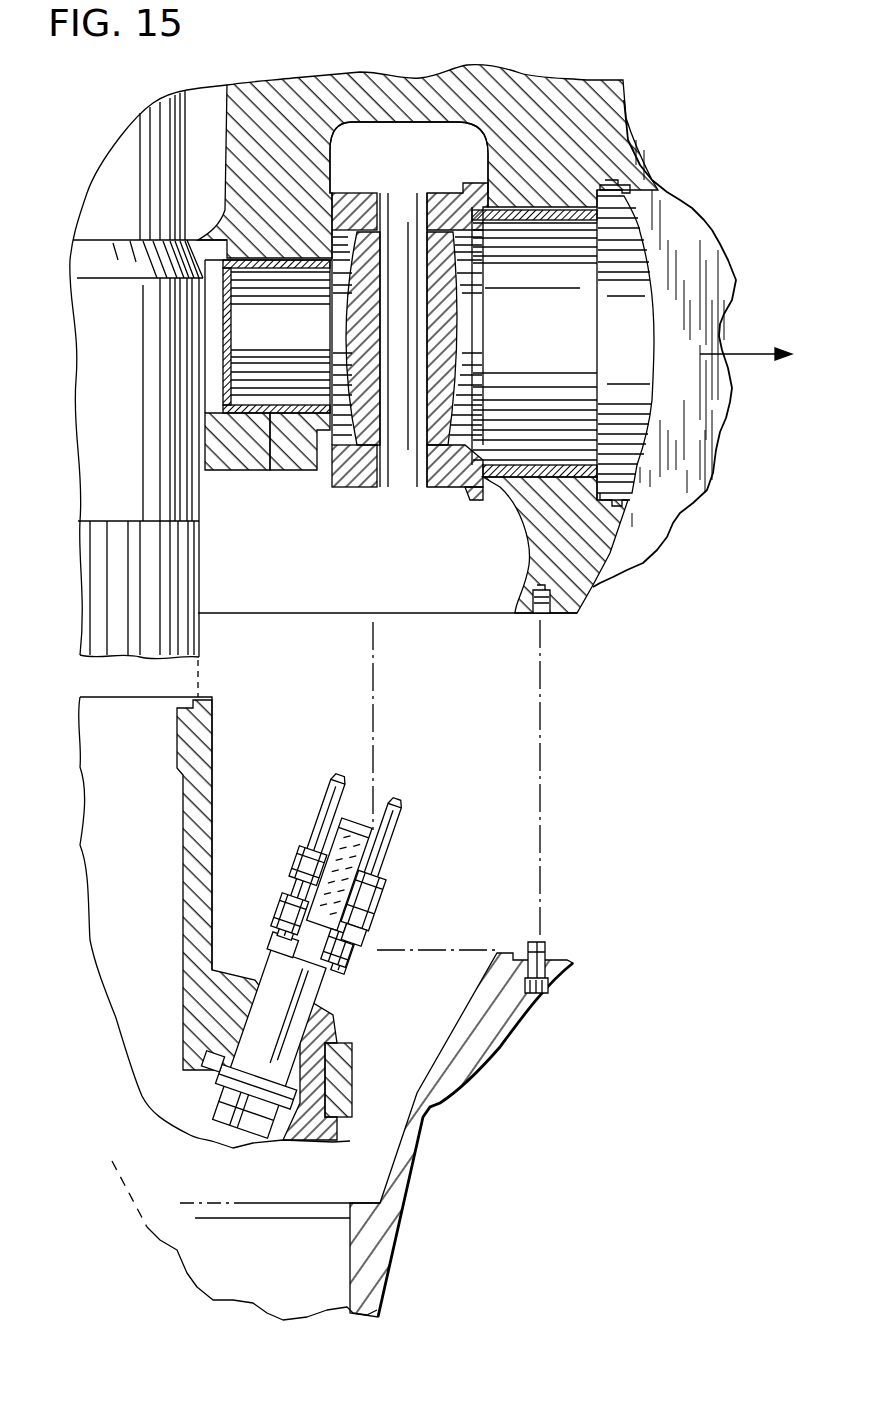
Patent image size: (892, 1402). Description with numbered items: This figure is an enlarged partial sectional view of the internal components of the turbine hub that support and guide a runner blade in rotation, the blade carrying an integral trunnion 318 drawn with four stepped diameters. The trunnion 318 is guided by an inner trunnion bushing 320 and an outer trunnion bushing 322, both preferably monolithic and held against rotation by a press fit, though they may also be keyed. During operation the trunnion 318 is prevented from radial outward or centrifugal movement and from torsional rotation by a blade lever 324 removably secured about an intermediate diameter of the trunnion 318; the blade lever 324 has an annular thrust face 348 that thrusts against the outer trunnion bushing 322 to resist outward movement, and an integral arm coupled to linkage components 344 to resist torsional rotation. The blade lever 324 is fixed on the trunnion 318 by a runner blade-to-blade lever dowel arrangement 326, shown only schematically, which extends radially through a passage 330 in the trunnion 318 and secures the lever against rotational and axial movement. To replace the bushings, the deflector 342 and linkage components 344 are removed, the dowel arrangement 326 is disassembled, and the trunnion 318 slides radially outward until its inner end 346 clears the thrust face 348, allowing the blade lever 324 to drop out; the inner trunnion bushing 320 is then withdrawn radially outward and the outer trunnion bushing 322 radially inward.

The trunnion 318 is at (264, 470).
The inner trunnion bushing 320 is at (297, 466).
The outer trunnion bushing 322 is at (527, 548).
The blade lever 324 is at (348, 487).
The runner blade-to-blade lever dowel arrangement 326 is at (408, 488).
The passage 330 is at (427, 233).
The deflector 342 is at (497, 1058).
The linkage components 344 is at (394, 884).
The inner end 346 is at (222, 343).
The annular thrust face 348 is at (482, 497).